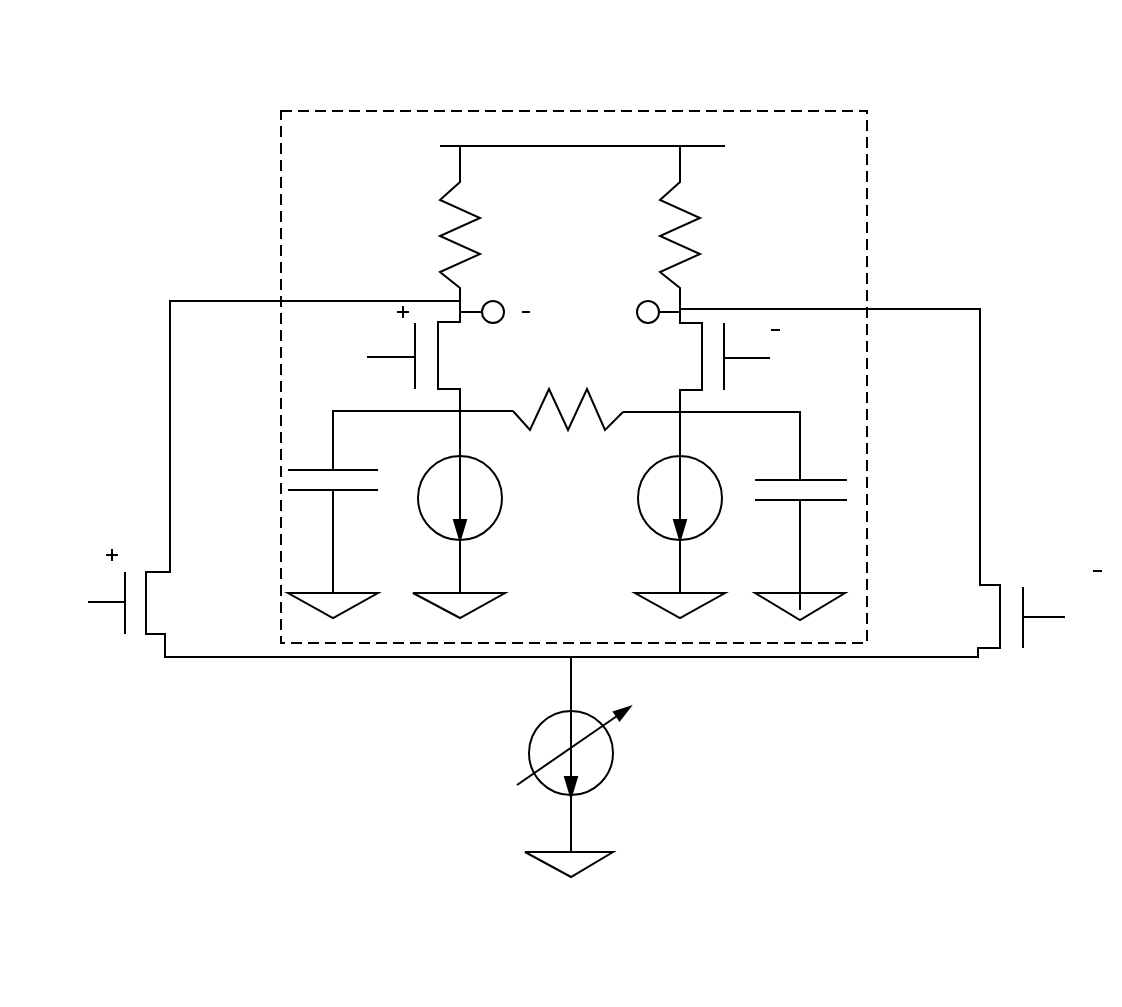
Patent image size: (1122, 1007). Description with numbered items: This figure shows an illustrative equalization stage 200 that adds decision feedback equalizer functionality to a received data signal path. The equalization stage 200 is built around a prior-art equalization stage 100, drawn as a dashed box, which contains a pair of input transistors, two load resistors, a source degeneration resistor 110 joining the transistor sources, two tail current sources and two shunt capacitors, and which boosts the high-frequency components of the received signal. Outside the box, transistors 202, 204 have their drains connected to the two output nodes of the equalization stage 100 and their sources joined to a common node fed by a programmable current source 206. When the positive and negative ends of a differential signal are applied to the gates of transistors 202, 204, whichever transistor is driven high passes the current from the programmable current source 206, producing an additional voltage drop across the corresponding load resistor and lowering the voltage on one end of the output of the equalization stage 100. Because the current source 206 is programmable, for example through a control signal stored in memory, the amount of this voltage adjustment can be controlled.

The equalization stage 200 is at (586, 43).
The equalization stage 100 is at (833, 111).
The source degeneration resistor 110 is at (553, 398).
The transistor 202 is at (155, 637).
The transistor 204 is at (1023, 625).
The programmable current source 206 is at (613, 762).